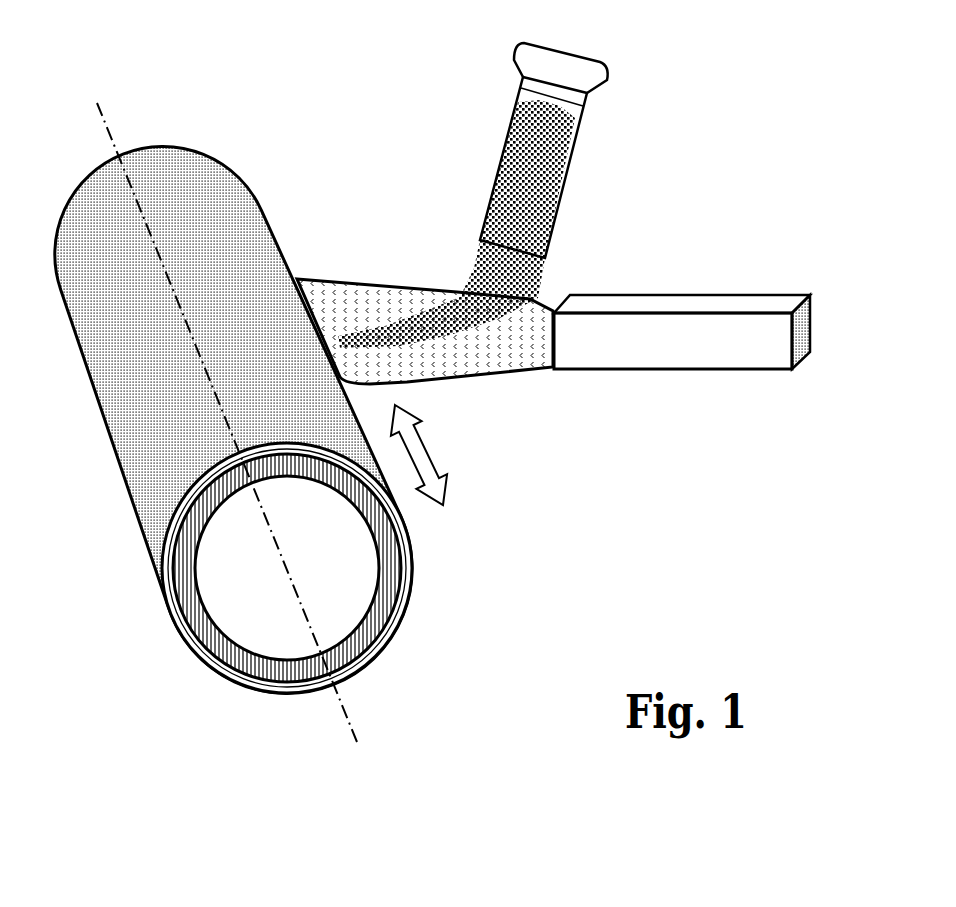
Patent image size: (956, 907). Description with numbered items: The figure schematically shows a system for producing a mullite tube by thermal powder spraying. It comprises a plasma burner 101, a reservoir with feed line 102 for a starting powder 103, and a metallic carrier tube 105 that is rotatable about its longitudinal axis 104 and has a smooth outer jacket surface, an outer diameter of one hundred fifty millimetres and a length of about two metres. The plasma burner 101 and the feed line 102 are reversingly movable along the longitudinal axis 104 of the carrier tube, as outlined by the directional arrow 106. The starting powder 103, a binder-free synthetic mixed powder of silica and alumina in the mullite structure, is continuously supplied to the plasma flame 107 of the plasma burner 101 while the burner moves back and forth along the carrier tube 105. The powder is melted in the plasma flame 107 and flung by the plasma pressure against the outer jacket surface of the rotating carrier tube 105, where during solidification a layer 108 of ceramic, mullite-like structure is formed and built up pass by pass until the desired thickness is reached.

The plasma burner 101 is at (642, 358).
The reservoir with feed line 102 is at (575, 112).
The starting powder 103 is at (458, 292).
The longitudinal axis 104 is at (350, 725).
The metallic carrier tube 105 is at (390, 562).
The directional arrow 106 is at (425, 467).
The plasma flame 107 is at (338, 280).
The layer 108 is at (150, 540).